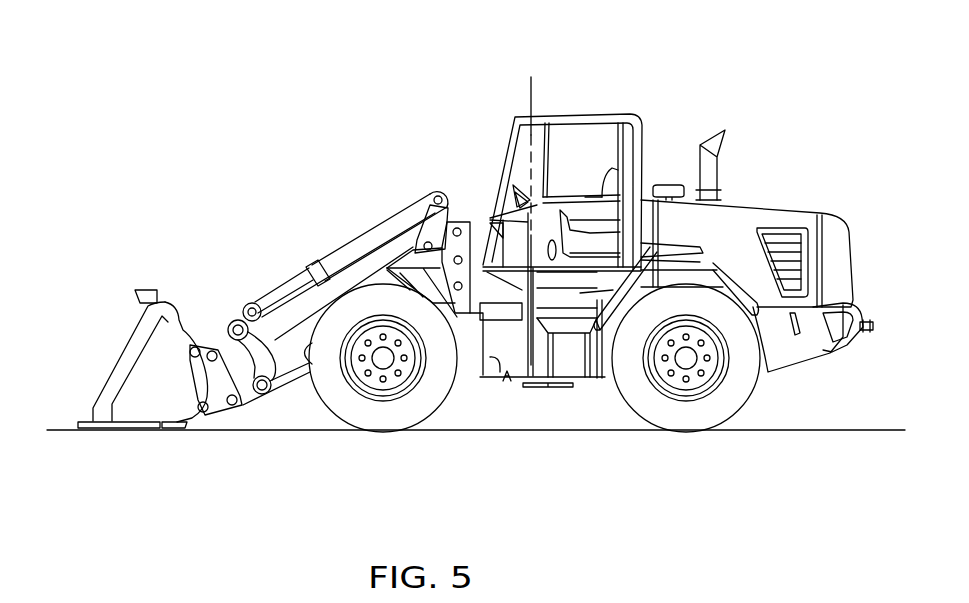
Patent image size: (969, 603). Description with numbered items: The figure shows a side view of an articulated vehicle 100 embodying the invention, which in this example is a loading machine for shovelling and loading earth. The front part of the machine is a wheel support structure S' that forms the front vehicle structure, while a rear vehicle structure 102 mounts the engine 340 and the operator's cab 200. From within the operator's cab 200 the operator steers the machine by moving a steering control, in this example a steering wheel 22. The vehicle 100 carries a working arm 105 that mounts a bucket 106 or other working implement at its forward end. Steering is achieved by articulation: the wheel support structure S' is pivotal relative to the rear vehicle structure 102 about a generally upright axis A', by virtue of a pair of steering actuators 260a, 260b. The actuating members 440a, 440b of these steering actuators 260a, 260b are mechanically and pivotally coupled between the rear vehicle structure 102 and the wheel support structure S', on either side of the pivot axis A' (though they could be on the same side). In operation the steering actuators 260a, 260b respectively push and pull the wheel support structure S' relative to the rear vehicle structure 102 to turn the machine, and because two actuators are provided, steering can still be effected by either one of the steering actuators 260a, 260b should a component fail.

The vehicle 100 is at (265, 168).
The rear vehicle structure 102 is at (802, 373).
The working arm 105 is at (230, 310).
The bucket 106 is at (115, 360).
The operator's cab 200 is at (607, 143).
The steering wheel 22 is at (514, 190).
The engine 340 is at (728, 228).
The actuating member 440a is at (490, 357).
The actuating member 440b is at (495, 364).
The steering actuator 260a is at (507, 372).
The steering actuator 260b is at (507, 376).
The wheel support structure S' is at (345, 228).
The upright axis A' is at (584, 193).